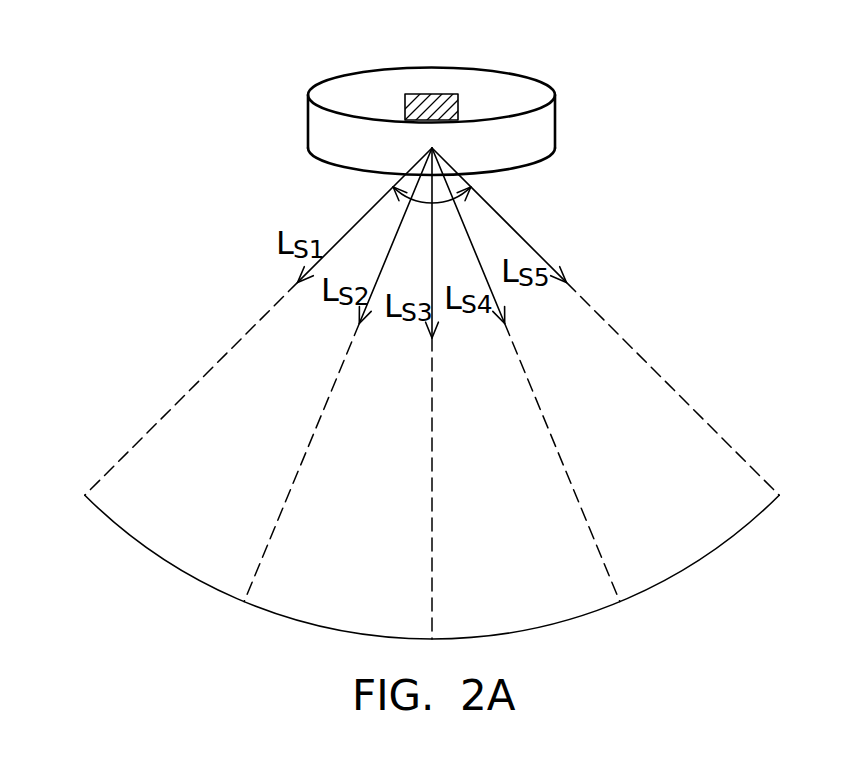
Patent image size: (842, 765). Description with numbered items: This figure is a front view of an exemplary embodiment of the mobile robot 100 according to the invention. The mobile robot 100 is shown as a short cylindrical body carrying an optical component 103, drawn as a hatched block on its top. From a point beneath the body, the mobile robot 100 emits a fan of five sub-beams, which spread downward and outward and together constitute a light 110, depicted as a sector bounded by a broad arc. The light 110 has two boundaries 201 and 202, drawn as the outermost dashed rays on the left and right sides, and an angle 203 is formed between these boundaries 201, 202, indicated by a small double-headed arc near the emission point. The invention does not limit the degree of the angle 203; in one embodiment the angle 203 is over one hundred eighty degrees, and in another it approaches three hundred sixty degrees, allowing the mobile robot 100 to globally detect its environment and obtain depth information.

The mobile robot 100 is at (512, 70).
The optical component 103 is at (428, 102).
The light 110 is at (690, 430).
The boundary 201 is at (218, 362).
The boundary 202 is at (645, 358).
The angle 203 is at (447, 212).